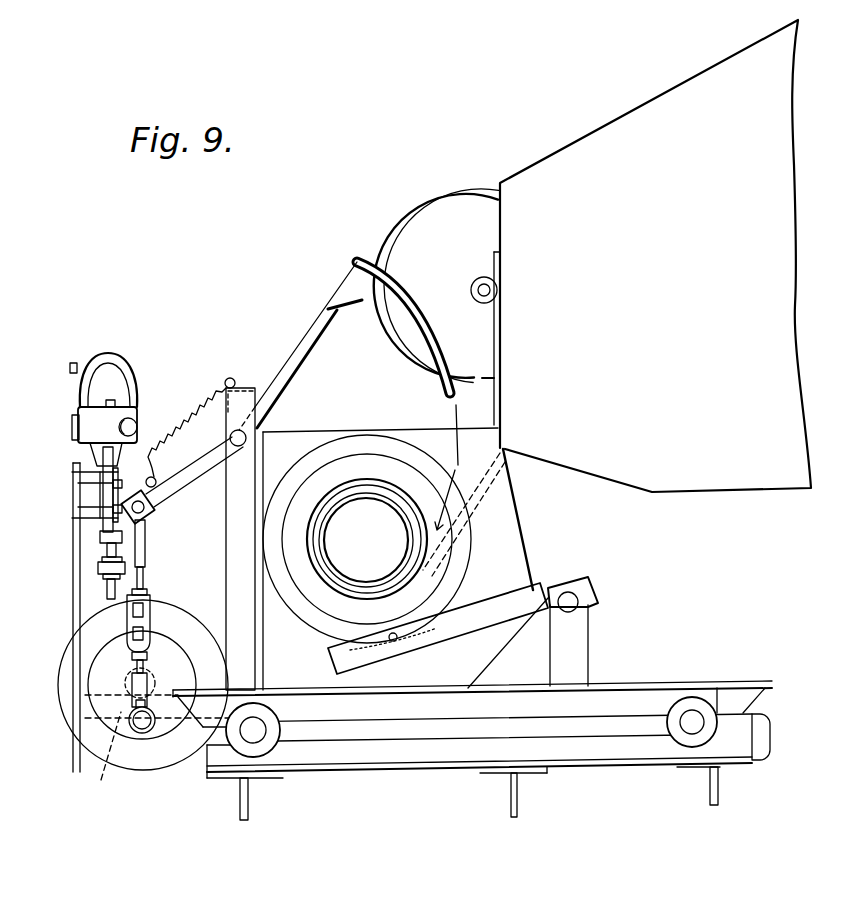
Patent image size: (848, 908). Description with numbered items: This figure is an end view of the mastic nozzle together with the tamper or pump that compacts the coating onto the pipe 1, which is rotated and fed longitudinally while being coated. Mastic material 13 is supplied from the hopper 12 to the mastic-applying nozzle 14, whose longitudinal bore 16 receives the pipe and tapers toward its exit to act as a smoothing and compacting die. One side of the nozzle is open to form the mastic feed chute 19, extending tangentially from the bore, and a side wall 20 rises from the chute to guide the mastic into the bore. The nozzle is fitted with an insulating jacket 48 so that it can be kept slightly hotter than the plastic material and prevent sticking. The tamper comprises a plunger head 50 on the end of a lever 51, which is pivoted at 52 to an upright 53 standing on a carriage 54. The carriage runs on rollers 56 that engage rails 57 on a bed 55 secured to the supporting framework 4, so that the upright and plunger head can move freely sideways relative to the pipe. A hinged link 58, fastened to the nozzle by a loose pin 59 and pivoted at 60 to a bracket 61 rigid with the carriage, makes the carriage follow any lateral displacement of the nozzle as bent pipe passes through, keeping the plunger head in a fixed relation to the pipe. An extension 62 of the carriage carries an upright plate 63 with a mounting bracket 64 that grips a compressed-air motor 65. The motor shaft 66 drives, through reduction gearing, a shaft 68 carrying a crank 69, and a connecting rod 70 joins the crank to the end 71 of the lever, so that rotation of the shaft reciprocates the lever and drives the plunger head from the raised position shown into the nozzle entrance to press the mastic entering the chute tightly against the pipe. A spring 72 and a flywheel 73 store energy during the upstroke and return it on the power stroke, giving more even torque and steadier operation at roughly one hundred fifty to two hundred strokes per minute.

The pipe 1 is at (384, 568).
The supporting framework 4 is at (510, 807).
The hopper 12 is at (736, 478).
The mastic material 13 is at (333, 587).
The mastic-applying nozzle 14 is at (427, 585).
The longitudinal bore 16 is at (318, 577).
The mastic feed chute 19 is at (478, 503).
The side wall 20 is at (420, 433).
The insulating jacket 48 is at (467, 545).
The plunger head 50 is at (378, 251).
The lever 51 is at (308, 347).
The pivot 52 is at (246, 441).
The upright 53 is at (232, 550).
The carriage 54 is at (343, 712).
The bed 55 is at (450, 763).
The rollers 56 is at (240, 748).
The rails 57 is at (605, 740).
The hinged link 58 is at (478, 627).
The loose pin 59 is at (393, 641).
The pivot 60 is at (575, 605).
The bracket 61 is at (585, 657).
The extension 62 is at (112, 757).
The upright plate 63 is at (78, 755).
The mounting bracket 64 is at (83, 493).
The motor 65 is at (123, 415).
The motor shaft 66 is at (110, 595).
The shaft 68 is at (147, 677).
The crank 69 is at (142, 733).
The connecting rod 70 is at (138, 548).
The lever end 71 is at (143, 509).
The spring 72 is at (193, 403).
The flywheel 73 is at (167, 613).